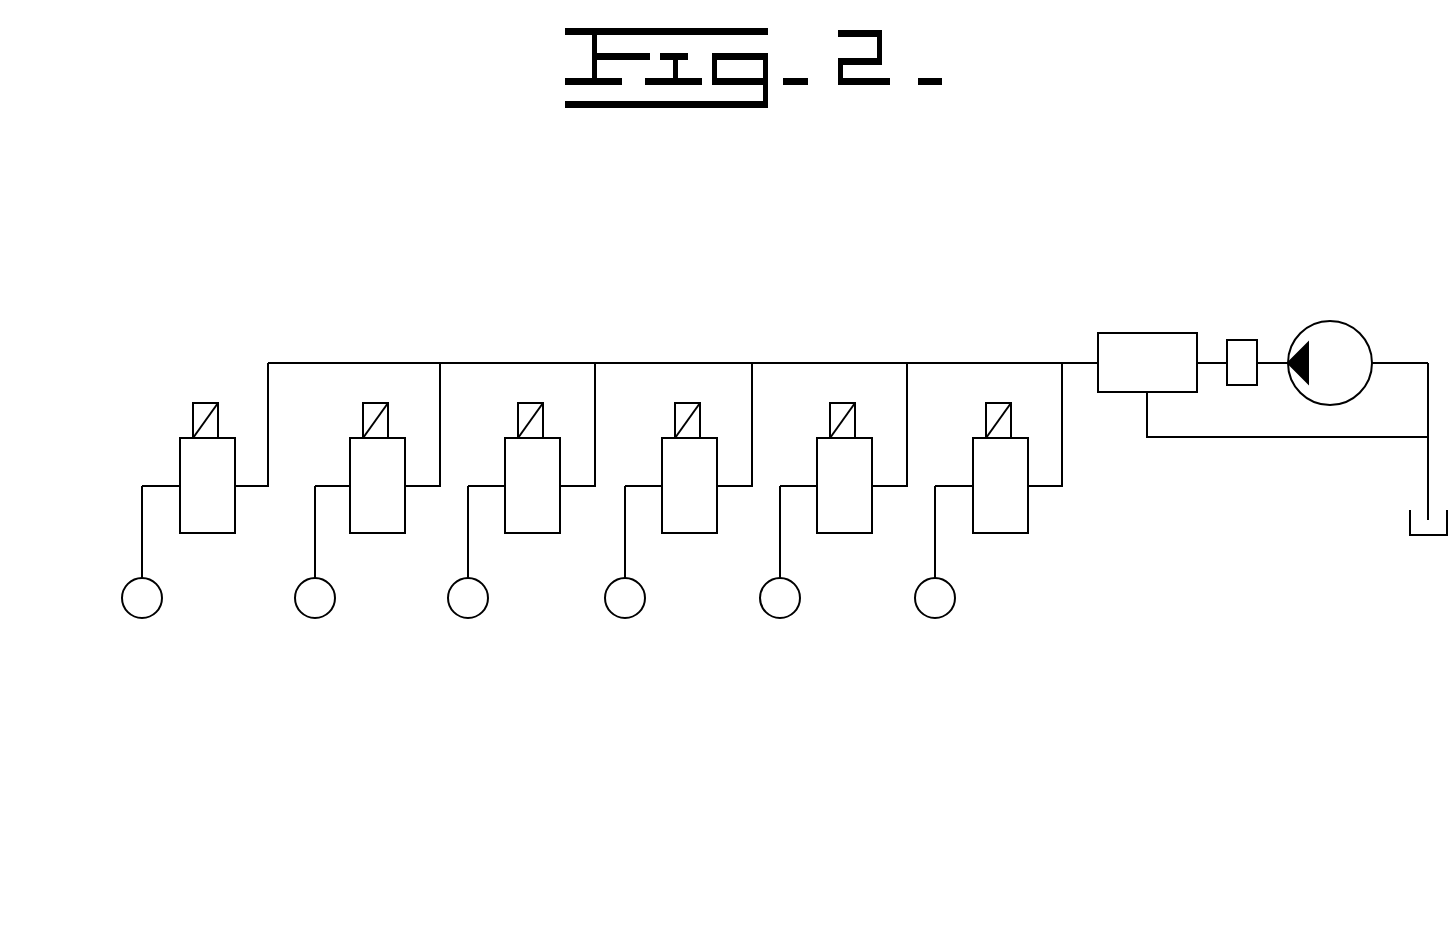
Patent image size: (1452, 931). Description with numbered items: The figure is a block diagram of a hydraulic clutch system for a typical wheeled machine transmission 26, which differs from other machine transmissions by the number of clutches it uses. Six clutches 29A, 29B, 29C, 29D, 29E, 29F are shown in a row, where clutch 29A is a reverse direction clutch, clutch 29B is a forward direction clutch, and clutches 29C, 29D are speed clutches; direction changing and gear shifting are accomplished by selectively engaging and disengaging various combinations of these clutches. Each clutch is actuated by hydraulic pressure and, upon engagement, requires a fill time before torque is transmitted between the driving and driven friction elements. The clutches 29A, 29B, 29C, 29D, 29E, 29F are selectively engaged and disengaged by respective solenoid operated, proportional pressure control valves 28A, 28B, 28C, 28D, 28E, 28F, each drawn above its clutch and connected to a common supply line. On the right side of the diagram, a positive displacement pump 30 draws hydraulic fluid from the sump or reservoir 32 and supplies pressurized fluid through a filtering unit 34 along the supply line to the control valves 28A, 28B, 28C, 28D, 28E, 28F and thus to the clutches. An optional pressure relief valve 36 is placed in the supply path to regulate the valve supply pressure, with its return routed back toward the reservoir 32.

The wheeled machine transmission 26 is at (195, 236).
The solenoid operated proportional pressure control valve 28A is at (193, 425).
The solenoid operated proportional pressure control valve 28B is at (363, 425).
The solenoid operated proportional pressure control valve 28C is at (518, 425).
The solenoid operated proportional pressure control valve 28D is at (675, 425).
The solenoid operated proportional pressure control valve 28E is at (830, 425).
The solenoid operated proportional pressure control valve 28F is at (986, 425).
The reverse direction clutch 29A is at (158, 588).
The forward direction clutch 29B is at (331, 588).
The speed clutch 29C is at (484, 588).
The speed clutch 29D is at (641, 588).
The clutch 29E is at (796, 588).
The clutch 29F is at (951, 588).
The positive displacement pump 30 is at (1340, 322).
The reservoir 32 is at (1410, 520).
The filtering unit 34 is at (1242, 340).
The pressure relief valve 36 is at (1150, 333).